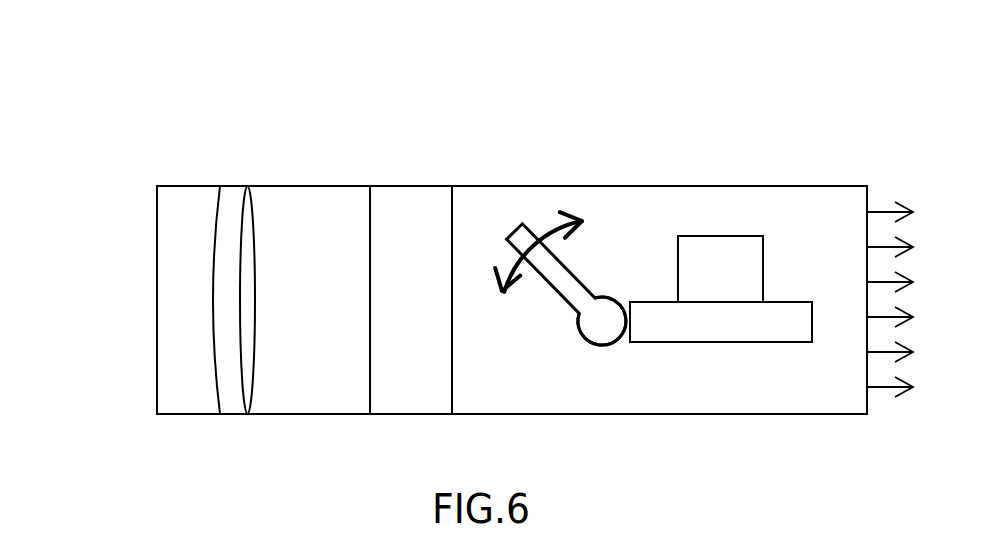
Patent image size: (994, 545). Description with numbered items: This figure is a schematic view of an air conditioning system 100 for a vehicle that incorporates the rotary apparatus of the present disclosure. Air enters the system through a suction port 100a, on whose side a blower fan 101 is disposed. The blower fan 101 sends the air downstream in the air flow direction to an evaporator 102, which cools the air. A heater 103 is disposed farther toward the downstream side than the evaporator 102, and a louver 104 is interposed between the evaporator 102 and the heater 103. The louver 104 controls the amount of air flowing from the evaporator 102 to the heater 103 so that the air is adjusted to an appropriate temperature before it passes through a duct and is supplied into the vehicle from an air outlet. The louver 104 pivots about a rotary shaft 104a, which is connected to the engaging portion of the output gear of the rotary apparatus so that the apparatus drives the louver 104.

The air conditioning system 100 is at (477, 20).
The suction port 100a is at (156, 272).
The blower fan 101 is at (230, 200).
The evaporator 102 is at (411, 197).
The heater 103 is at (712, 243).
The louver 104 is at (580, 280).
The rotary shaft 104a is at (603, 326).